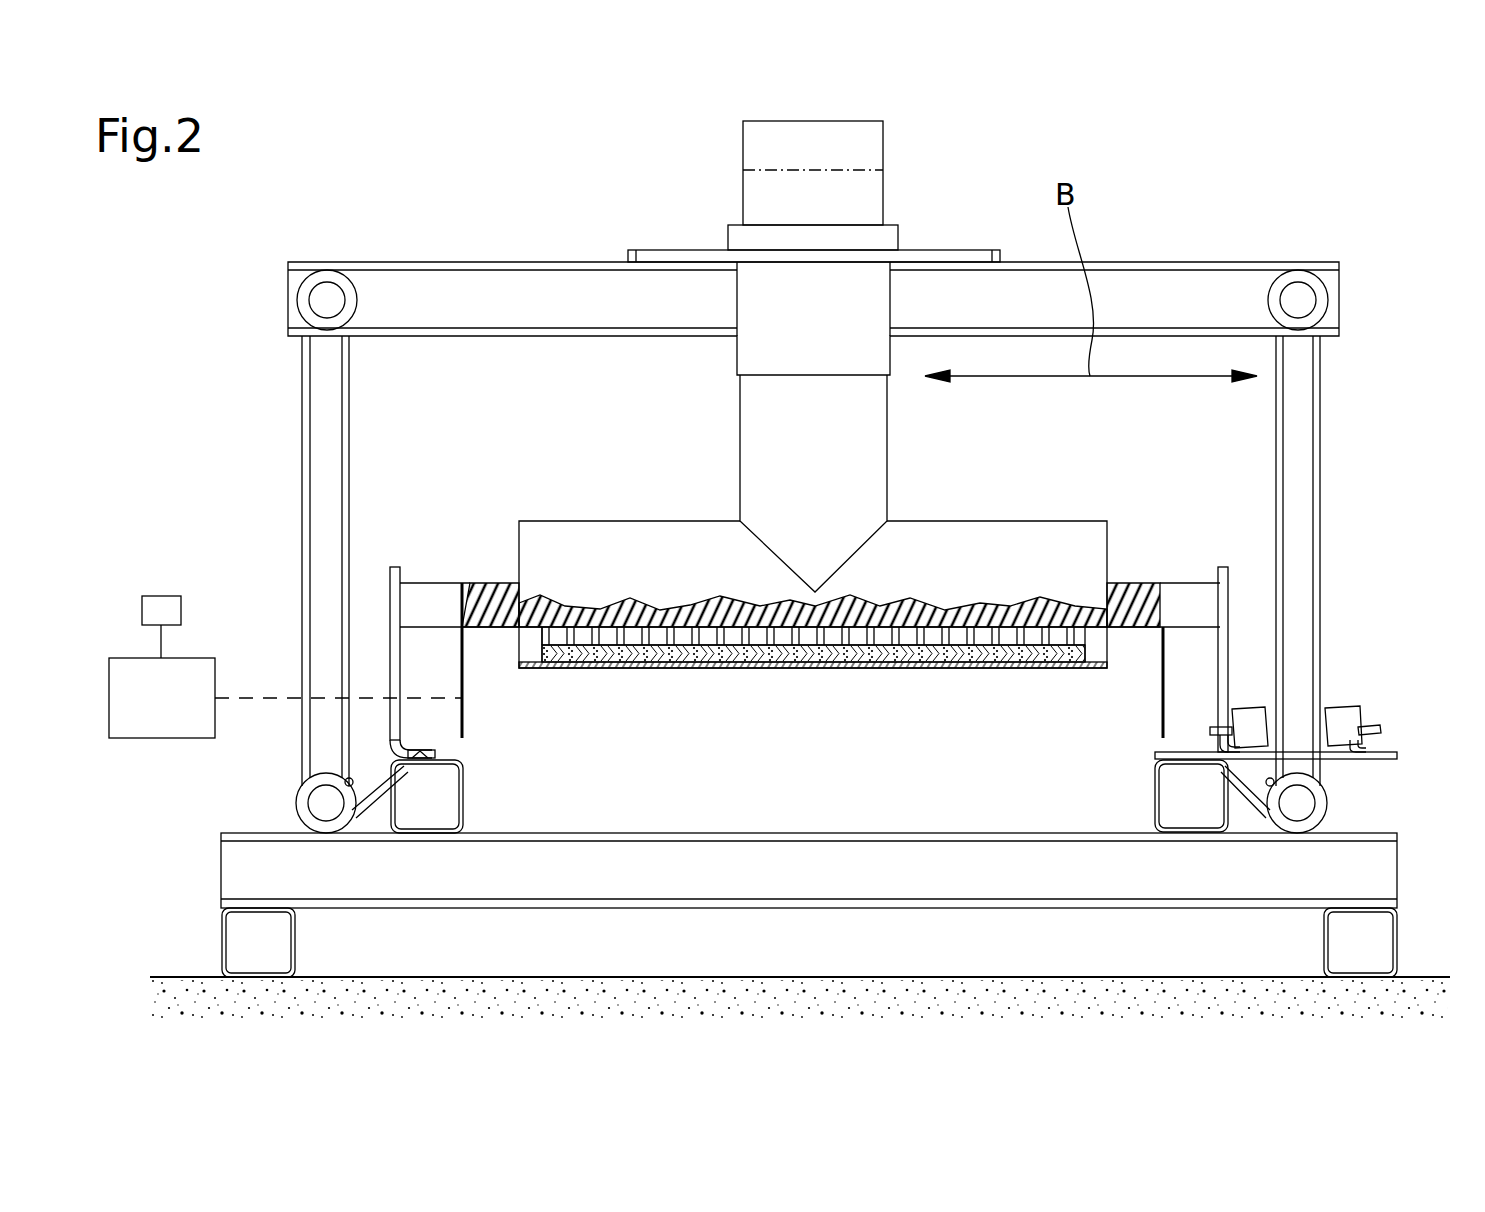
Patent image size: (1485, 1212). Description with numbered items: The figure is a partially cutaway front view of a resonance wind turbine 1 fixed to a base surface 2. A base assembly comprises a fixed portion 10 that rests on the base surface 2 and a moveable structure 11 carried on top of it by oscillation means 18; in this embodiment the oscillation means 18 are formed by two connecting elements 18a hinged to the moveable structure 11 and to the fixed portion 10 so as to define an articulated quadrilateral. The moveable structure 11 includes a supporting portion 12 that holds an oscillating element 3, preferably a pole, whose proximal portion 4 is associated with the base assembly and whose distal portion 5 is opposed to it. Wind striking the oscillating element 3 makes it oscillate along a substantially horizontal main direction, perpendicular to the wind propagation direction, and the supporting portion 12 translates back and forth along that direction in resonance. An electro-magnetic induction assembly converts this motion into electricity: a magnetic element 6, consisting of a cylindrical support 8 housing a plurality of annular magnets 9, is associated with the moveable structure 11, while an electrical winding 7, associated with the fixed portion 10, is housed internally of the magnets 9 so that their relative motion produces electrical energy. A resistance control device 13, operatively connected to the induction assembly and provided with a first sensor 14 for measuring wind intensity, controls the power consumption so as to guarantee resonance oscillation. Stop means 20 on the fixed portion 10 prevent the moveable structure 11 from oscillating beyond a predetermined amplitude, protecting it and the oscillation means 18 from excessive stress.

The resonance wind turbine 1 is at (1388, 192).
The base surface 2 is at (1415, 972).
The oscillating element 3 is at (856, 173).
The proximal portion 4 is at (822, 217).
The distal portion 5 is at (822, 162).
The magnetic element 6 is at (1063, 580).
The electrical winding 7 is at (1157, 617).
The cylindrical support 8 is at (1097, 650).
The magnets 9 is at (640, 645).
The fixed portion 10 is at (830, 883).
The moveable structure 11 is at (1165, 292).
The supporting portion 12 is at (814, 243).
The resistance control device 13 is at (180, 714).
The first sensor 14 is at (170, 605).
The oscillation means 18 is at (318, 432).
The connecting elements 18a is at (1300, 407).
The stop means 20 is at (1343, 727).